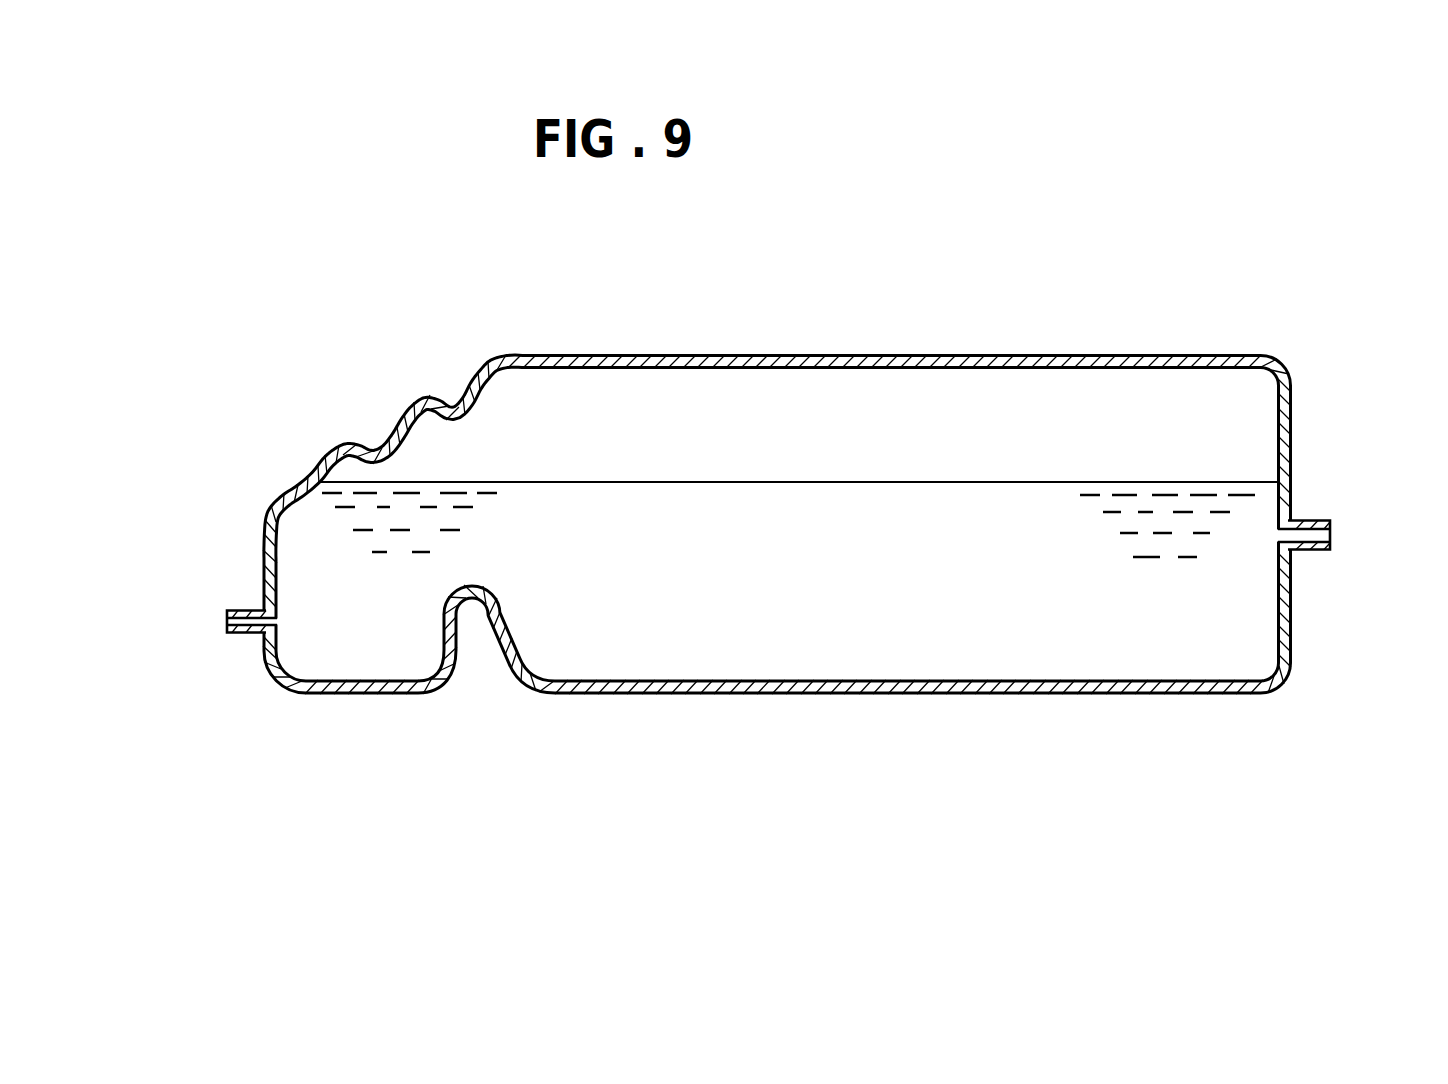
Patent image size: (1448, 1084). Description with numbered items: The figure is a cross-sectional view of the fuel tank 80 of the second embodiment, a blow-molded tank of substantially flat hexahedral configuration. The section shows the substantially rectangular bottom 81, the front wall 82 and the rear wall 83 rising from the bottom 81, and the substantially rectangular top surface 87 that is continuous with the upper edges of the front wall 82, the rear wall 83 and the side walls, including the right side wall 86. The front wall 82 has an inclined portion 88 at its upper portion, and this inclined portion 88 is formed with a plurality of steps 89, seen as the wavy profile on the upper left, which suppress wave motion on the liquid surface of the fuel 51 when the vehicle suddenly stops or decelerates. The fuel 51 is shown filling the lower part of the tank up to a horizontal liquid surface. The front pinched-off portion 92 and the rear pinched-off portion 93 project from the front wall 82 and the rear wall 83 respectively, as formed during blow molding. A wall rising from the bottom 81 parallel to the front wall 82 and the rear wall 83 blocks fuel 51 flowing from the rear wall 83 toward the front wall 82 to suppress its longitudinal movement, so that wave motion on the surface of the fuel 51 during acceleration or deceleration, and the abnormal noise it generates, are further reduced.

The fuel tank 80 is at (243, 90).
The bottom 81 is at (755, 694).
The front wall 82 is at (212, 545).
The rear wall 83 is at (1291, 427).
The right side wall 86 is at (882, 408).
The top surface 87 is at (790, 353).
The inclined portion 88 is at (277, 507).
The steps 89 is at (307, 483).
The fuel 51 is at (987, 481).
The front pinched-off portion 92 is at (227, 614).
The rear pinched-off portion 93 is at (1325, 519).